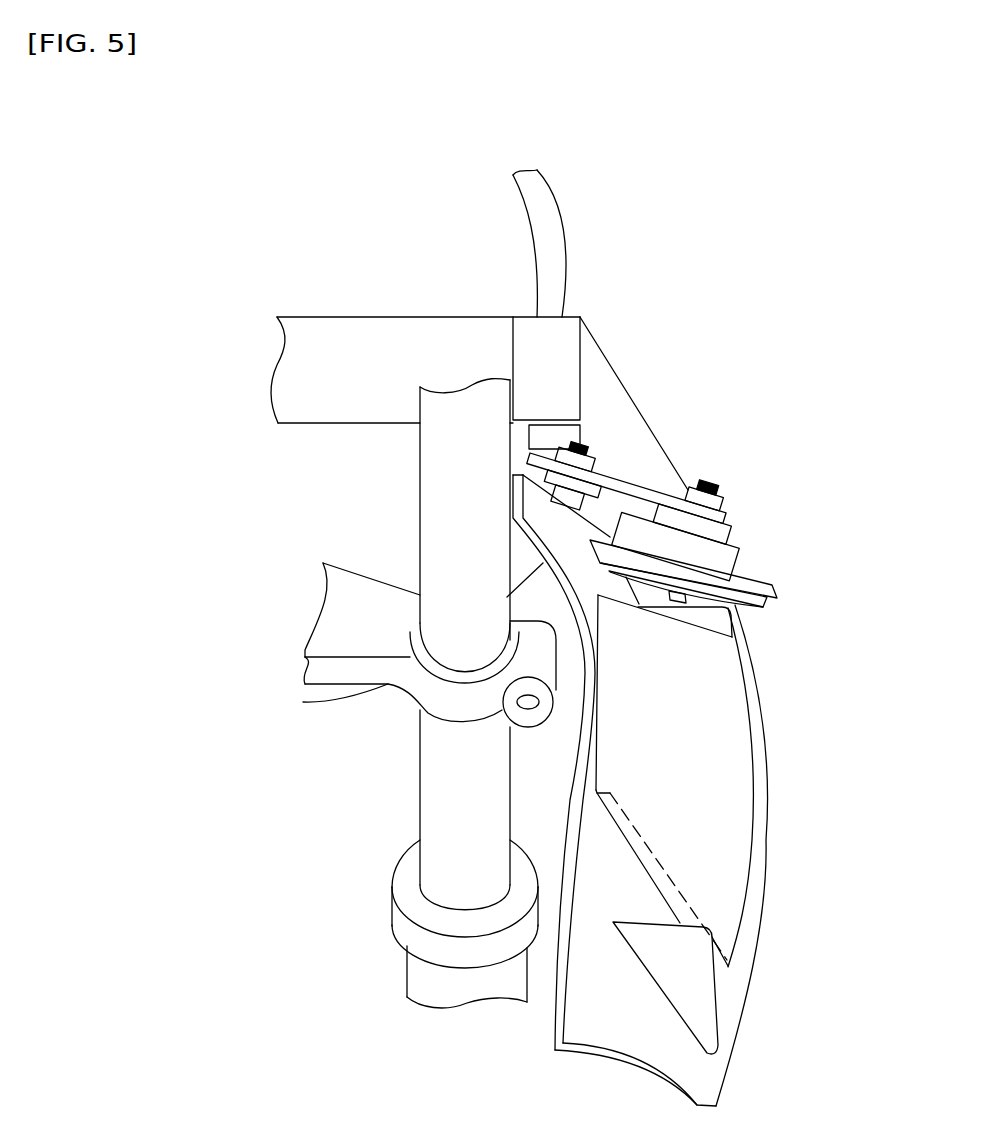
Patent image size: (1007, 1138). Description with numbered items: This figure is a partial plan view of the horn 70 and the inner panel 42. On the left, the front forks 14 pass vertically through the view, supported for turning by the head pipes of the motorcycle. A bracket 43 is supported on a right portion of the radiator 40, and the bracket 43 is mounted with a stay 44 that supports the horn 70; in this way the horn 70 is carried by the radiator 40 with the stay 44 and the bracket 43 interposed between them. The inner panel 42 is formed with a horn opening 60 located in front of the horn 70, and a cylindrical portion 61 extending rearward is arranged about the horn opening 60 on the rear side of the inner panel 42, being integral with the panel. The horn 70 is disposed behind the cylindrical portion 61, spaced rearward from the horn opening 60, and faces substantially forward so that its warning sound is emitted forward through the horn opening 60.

The front forks 14 is at (443, 783).
The radiator 40 is at (355, 337).
The inner panel 42 is at (750, 921).
The bracket 43 is at (577, 438).
The stay 44 is at (653, 492).
The horn opening 60 is at (673, 886).
The cylindrical portion 61 is at (720, 768).
The horn 70 is at (753, 563).